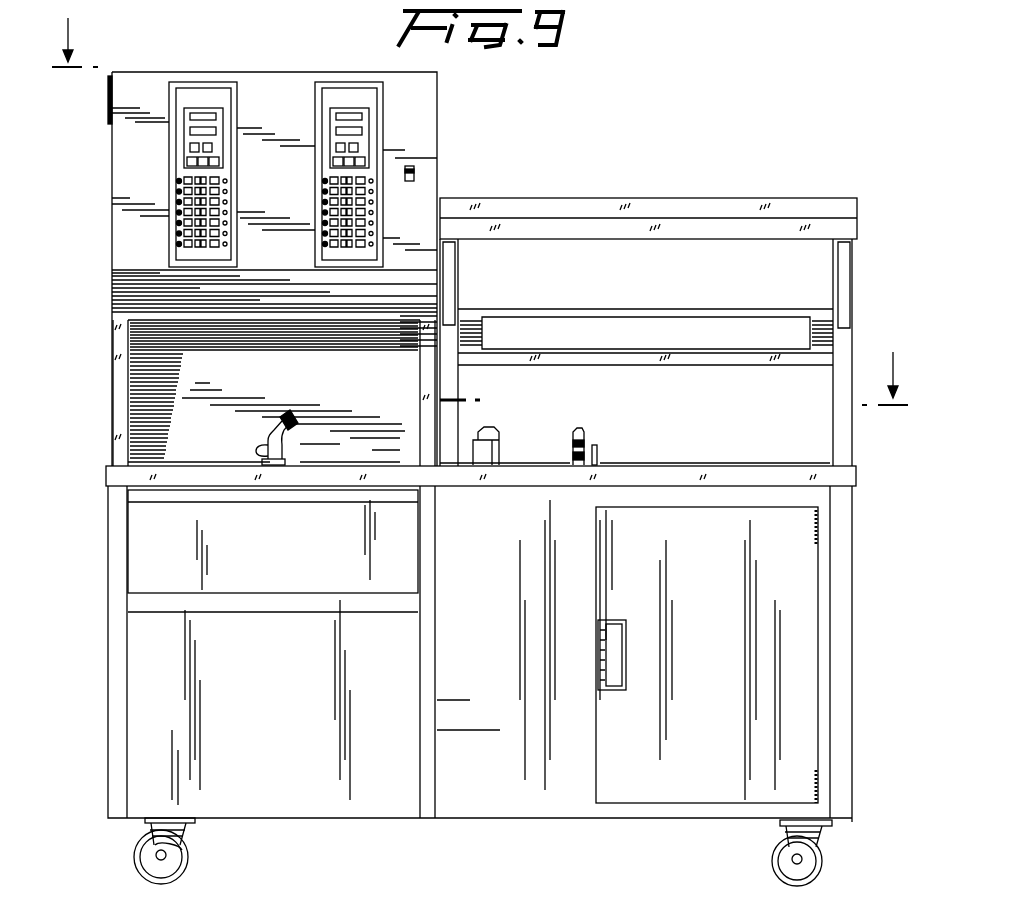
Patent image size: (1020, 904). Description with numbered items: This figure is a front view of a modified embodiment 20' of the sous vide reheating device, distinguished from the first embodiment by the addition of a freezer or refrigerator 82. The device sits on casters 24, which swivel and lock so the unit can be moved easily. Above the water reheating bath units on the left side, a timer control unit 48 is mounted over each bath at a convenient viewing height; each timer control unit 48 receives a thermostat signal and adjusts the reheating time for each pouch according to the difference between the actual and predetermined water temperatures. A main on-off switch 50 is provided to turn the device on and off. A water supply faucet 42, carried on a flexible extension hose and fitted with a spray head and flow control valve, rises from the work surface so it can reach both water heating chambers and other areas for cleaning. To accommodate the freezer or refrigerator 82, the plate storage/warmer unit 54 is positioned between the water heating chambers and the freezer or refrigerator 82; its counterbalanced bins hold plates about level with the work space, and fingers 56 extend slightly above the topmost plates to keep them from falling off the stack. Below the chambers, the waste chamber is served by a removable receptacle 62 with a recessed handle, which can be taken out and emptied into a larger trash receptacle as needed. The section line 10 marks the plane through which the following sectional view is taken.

The section line 10— 10 is at (480, 223).
The modified embodiment of the sous vide reheating device 20' is at (648, 299).
The casters 24 is at (188, 838).
The water supply faucet 42 is at (292, 428).
The timer control unit 48 is at (170, 159).
The main on-off switch 50 is at (415, 175).
The plate storage/warmer unit 54 is at (521, 463).
The fingers 56 is at (488, 427).
The removable receptacle 62 is at (283, 596).
The freezer or refrigerator 82 is at (795, 688).